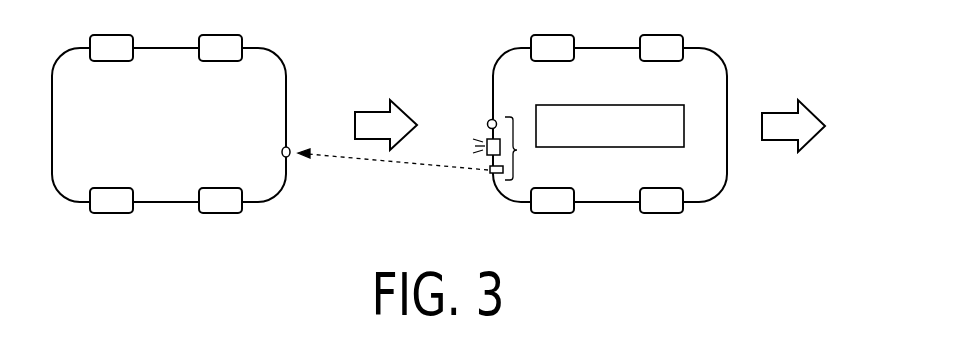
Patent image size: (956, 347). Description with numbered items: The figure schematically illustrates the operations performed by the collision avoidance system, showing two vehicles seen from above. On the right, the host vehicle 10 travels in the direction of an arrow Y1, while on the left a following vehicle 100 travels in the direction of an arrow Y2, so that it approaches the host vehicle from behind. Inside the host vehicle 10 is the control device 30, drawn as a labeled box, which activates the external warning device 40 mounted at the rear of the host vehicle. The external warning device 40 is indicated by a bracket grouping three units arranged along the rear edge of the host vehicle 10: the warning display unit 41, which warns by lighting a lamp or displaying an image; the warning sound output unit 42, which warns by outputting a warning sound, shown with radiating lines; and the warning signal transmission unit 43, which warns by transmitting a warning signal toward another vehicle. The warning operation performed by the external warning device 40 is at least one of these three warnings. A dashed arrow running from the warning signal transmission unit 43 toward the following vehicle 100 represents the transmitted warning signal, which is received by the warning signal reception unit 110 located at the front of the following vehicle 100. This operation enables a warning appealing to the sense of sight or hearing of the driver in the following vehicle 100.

The host vehicle 10 is at (603, 47).
The control device 30 is at (602, 105).
The external warning device 40 is at (517, 150).
The warning display unit 41 is at (488, 123).
The warning sound output unit 42 is at (486, 139).
The warning signal transmission unit 43 is at (488, 174).
The following vehicle 100 is at (163, 47).
The warning signal reception unit 110 is at (290, 157).
The arrow Y1 is at (779, 112).
The arrow Y2 is at (373, 111).